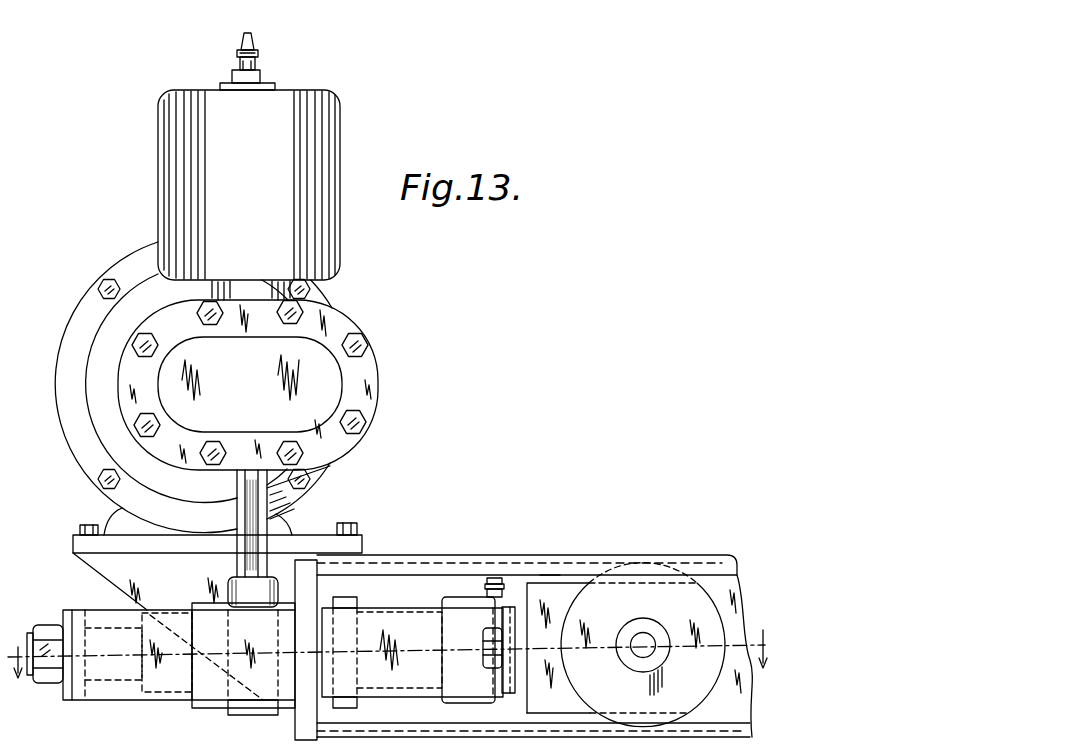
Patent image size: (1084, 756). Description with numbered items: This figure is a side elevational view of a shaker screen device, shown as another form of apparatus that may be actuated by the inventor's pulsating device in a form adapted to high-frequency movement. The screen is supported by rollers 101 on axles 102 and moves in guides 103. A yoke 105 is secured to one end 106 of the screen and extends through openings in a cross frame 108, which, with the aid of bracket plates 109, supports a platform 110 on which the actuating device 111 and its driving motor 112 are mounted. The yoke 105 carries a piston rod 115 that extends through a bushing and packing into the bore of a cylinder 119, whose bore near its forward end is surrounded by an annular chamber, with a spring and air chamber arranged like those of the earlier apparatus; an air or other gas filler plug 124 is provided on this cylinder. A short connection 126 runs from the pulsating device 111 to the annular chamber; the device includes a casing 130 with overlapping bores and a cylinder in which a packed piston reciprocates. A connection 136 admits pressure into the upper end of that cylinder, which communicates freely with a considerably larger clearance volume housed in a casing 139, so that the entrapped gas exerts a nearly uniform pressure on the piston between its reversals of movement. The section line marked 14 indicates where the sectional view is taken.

The rollers 101 is at (602, 590).
The axles 102 is at (647, 635).
The guides 103 is at (553, 575).
The yoke 105 is at (82, 687).
The end of screen 106 is at (519, 580).
The cross frame 108 is at (328, 582).
The bracket plates 109 is at (112, 578).
The platform 110 is at (285, 545).
The actuating device 111 is at (377, 372).
The driving motor 112 is at (63, 428).
The piston rod 115 is at (118, 682).
The cylinder 119 is at (408, 610).
The filler plug 124 is at (490, 577).
The connection 126 is at (267, 489).
The casing 130 is at (310, 353).
The connection 136 is at (237, 50).
The casing 139 is at (137, 156).
The section line 14- 14 is at (392, 666).